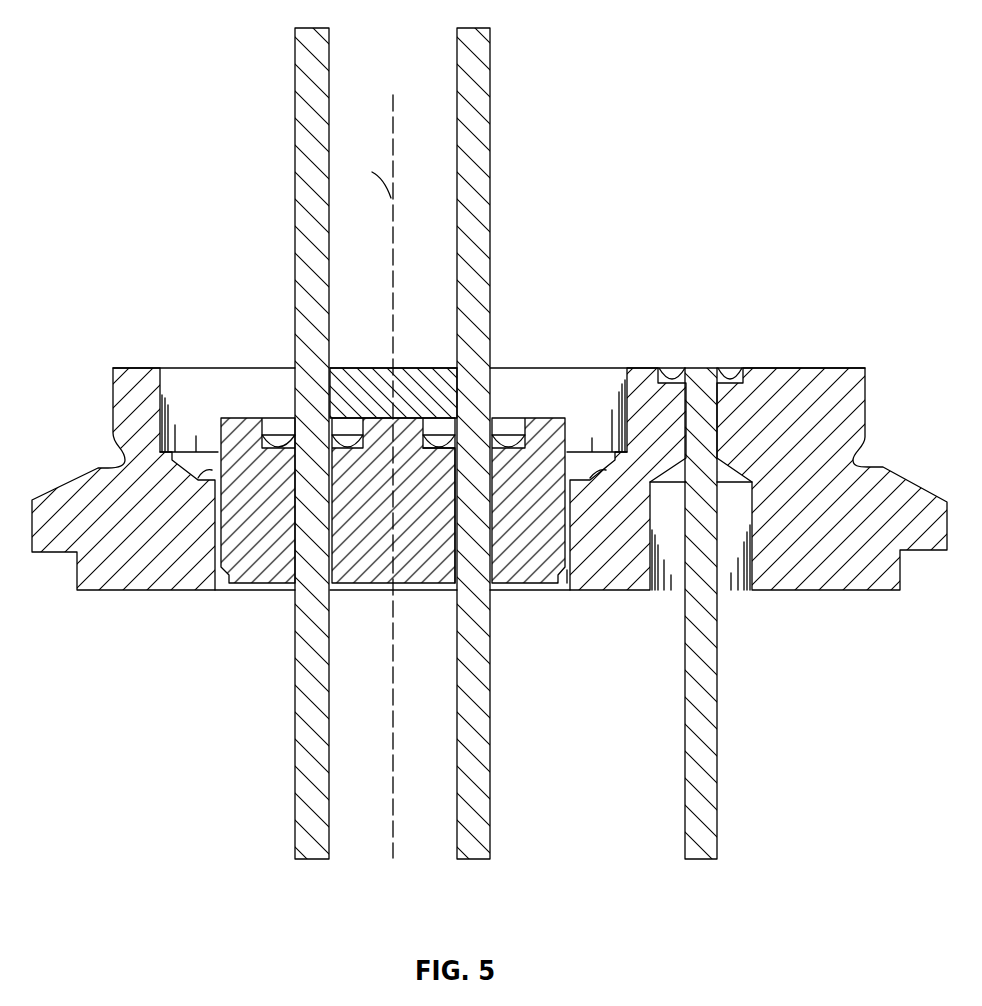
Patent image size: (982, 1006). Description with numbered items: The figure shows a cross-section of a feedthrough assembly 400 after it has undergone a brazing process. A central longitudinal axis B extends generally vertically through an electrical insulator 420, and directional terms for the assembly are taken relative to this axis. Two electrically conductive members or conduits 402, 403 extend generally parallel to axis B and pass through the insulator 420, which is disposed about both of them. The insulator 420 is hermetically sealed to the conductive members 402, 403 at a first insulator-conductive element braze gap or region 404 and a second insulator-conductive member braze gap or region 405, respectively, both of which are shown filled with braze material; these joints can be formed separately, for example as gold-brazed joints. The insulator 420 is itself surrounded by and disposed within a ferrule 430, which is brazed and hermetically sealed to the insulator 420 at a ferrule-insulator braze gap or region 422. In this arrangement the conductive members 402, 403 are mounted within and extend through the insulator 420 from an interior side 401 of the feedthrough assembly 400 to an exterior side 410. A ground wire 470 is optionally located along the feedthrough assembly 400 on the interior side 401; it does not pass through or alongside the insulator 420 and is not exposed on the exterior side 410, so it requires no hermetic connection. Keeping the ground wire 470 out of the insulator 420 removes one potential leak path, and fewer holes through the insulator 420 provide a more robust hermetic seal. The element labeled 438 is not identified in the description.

The feedthrough assembly 400 is at (822, 46).
The interior side 401 is at (602, 881).
The conductive member 402 is at (473, 277).
The conductive member 403 is at (312, 277).
The first insulator-conductive element braze gap 404 is at (448, 602).
The second insulator-conductive member braze gap 405 is at (337, 602).
The exterior side 410 is at (122, 260).
The electrical insulator 420 is at (533, 440).
The ferrule-insulator braze gap 422 is at (575, 587).
The ferrule 430 is at (773, 407).
The seal 438 is at (222, 413).
The ground wire 470 is at (705, 762).